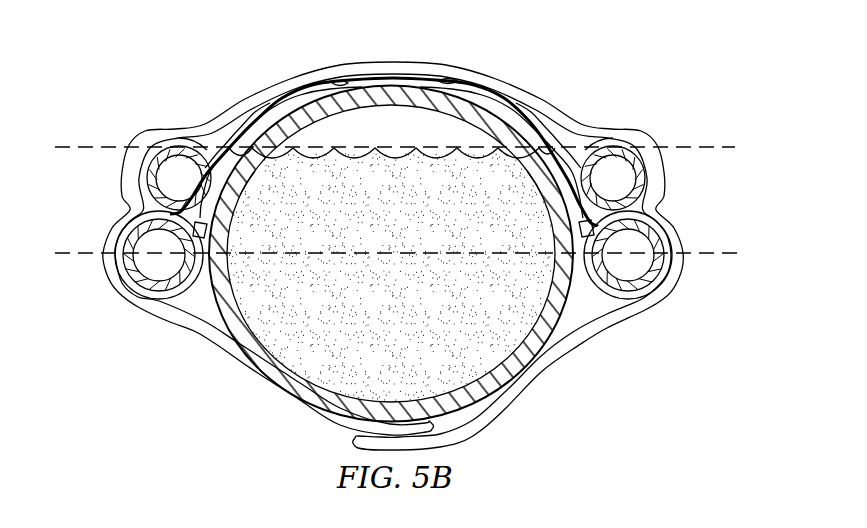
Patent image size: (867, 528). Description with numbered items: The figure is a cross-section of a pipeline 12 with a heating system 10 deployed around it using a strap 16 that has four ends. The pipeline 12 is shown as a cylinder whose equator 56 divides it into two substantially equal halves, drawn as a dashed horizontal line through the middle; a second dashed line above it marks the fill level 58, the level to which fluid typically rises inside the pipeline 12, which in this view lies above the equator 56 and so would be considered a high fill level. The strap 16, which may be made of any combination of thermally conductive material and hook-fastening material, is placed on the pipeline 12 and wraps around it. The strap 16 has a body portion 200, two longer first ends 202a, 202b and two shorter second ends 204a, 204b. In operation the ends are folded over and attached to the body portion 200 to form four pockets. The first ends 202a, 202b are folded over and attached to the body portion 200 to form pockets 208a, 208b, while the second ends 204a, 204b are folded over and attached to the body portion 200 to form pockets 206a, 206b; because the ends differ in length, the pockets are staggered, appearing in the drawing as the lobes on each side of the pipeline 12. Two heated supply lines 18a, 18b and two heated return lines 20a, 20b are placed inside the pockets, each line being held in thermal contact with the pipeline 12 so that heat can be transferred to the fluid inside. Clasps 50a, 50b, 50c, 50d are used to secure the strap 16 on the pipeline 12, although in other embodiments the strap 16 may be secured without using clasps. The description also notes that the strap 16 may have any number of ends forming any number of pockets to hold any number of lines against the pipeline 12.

The heating system 10 is at (562, 412).
The pipeline 12 is at (400, 93).
The strap 16 is at (273, 95).
The heated supply line 18a is at (654, 189).
The heated supply line 18b is at (660, 276).
The heated return line 20a is at (147, 176).
The heated return line 20b is at (133, 286).
The clasp 50a is at (542, 186).
The clasp 50b is at (246, 188).
The clasp 50c is at (236, 222).
The clasp 50d is at (567, 229).
The equator 56 is at (712, 254).
The fill level 58 is at (87, 146).
The body portion 200 is at (437, 62).
The first end 202a is at (483, 96).
The first end 202b is at (253, 110).
The second end 204a is at (523, 101).
The second end 204b is at (307, 80).
The pocket 206a is at (588, 150).
The pocket 206b is at (206, 150).
The pocket 208a is at (640, 218).
The pocket 208b is at (152, 213).